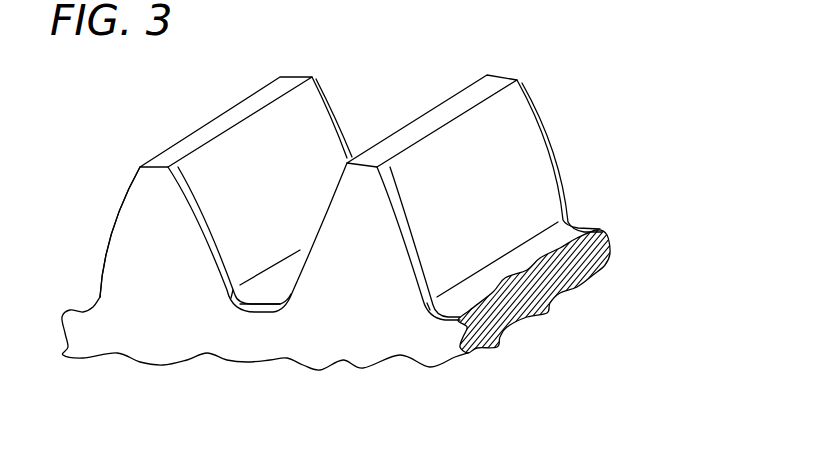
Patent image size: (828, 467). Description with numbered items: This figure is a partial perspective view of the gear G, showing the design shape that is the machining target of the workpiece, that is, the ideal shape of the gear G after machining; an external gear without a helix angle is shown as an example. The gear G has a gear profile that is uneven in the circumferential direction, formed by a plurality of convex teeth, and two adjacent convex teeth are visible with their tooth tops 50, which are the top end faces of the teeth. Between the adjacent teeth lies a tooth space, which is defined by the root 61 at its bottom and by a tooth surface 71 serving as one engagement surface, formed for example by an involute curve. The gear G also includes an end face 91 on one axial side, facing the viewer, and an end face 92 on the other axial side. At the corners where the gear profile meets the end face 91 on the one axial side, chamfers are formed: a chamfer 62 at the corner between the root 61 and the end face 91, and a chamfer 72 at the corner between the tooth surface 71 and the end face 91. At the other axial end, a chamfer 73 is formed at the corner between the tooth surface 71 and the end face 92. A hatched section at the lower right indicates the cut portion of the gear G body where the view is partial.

The gear G is at (607, 125).
The tooth top 50 is at (182, 145).
The tooth surface 71 is at (245, 148).
The chamfer 73 is at (335, 112).
The chamfer 72 is at (203, 225).
The root 61 is at (277, 285).
The chamfer 62 is at (253, 307).
The end face 91 is at (138, 238).
The end face 92 is at (540, 112).